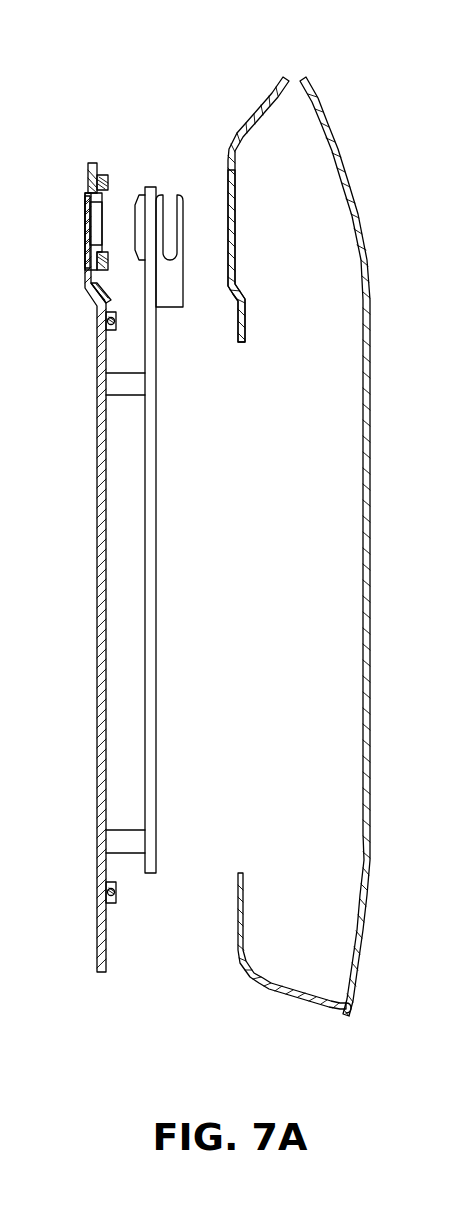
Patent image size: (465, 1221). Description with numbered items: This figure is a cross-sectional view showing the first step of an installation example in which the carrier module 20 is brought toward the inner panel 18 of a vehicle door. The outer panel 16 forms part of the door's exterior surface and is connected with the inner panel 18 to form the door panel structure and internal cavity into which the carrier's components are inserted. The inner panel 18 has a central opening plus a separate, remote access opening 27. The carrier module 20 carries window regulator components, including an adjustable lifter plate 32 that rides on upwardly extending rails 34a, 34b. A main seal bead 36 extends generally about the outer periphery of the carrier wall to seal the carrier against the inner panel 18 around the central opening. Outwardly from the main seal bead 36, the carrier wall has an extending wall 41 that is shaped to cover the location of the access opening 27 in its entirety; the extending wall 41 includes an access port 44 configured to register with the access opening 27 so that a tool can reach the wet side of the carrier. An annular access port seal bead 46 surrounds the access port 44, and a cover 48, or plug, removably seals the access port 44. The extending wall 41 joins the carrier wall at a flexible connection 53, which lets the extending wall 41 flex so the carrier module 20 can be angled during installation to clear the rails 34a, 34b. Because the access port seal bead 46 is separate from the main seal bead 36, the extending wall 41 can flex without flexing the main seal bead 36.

The outer panel 16 is at (370, 497).
The inner panel 18 is at (248, 110).
The carrier module 20 is at (97, 683).
The access opening 27 is at (235, 233).
The adjustable lifter plate 32 is at (170, 293).
The rail 34a is at (186, 530).
The rail 34b is at (158, 548).
The main seal bead 36 is at (113, 322).
The extending wall 41 is at (92, 167).
The access port 44 is at (100, 223).
The access port seal bead 46 is at (107, 188).
The cover 48 is at (87, 223).
The flexible connection 53 is at (97, 298).